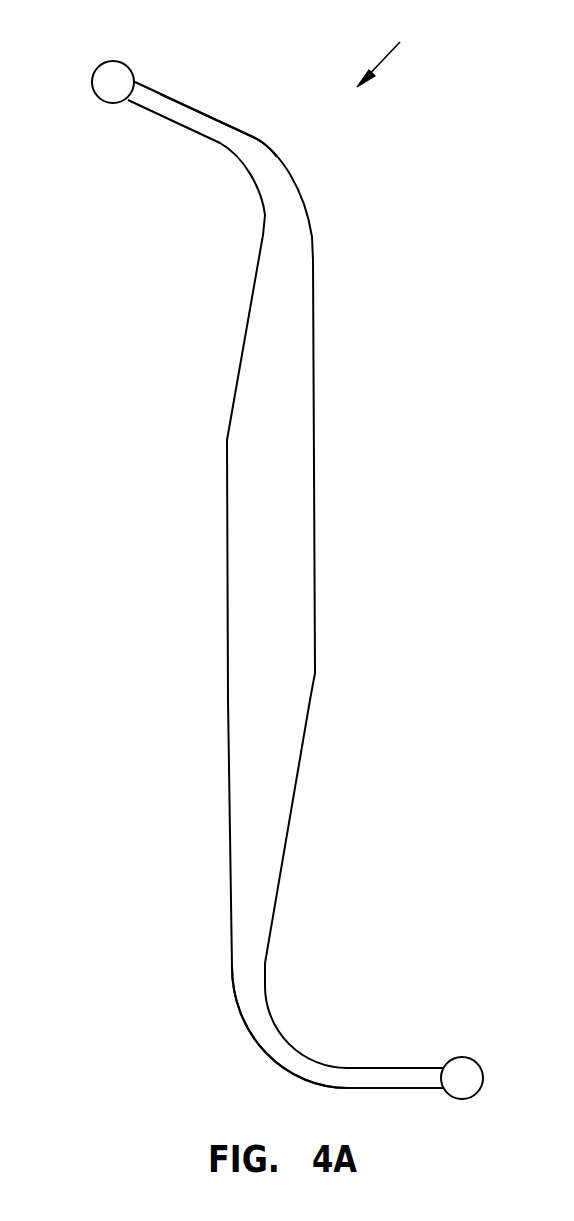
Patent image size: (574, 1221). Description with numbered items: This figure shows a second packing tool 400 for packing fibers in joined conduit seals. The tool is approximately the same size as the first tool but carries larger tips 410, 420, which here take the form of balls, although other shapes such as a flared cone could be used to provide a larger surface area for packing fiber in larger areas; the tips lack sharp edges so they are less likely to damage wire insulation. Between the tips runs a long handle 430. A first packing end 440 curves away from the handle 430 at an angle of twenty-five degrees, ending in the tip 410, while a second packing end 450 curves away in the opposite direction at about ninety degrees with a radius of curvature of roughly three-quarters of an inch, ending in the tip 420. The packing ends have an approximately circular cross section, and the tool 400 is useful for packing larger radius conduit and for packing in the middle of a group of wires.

The second packing tool 400 is at (391, 52).
The tip 410 is at (93, 76).
The tip 420 is at (457, 1056).
The handle 430 is at (318, 460).
The first packing end 440 is at (178, 102).
The second packing end 450 is at (268, 1053).